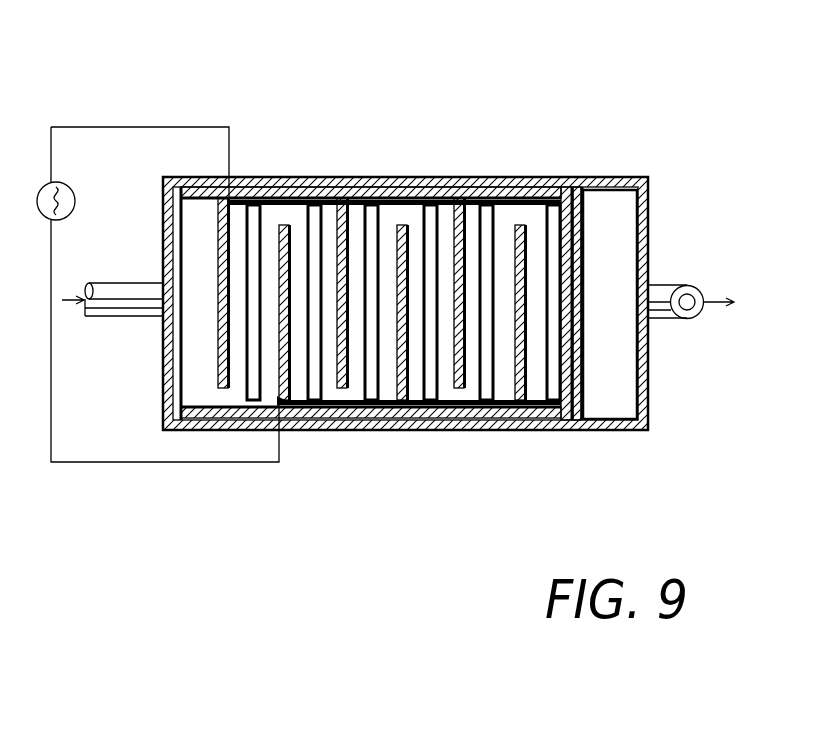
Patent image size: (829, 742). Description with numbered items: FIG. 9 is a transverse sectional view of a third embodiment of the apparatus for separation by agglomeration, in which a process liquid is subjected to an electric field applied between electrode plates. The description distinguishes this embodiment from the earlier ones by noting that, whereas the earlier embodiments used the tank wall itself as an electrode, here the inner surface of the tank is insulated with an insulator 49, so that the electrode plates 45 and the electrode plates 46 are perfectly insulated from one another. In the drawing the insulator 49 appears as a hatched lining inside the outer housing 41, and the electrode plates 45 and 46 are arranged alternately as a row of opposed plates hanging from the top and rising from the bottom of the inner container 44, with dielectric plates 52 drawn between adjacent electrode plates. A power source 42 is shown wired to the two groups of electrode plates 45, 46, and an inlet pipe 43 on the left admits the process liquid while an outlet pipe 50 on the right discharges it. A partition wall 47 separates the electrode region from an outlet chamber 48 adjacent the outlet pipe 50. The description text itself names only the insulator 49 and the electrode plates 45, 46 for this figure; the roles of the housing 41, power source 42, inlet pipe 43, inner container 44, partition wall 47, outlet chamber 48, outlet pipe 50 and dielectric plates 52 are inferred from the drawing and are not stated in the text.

The housing 41 is at (188, 183).
The AC power source 42 is at (53, 183).
The inlet pipe 43 is at (117, 308).
The inner container 44 is at (414, 228).
The electrode plates 45 is at (352, 228).
The electrode plates 46 is at (288, 348).
The partition wall 47 is at (582, 396).
The outlet chamber 48 is at (612, 367).
The insulator 49 is at (525, 188).
The outlet pipe 50 is at (695, 287).
The dielectric plates 52 is at (304, 222).